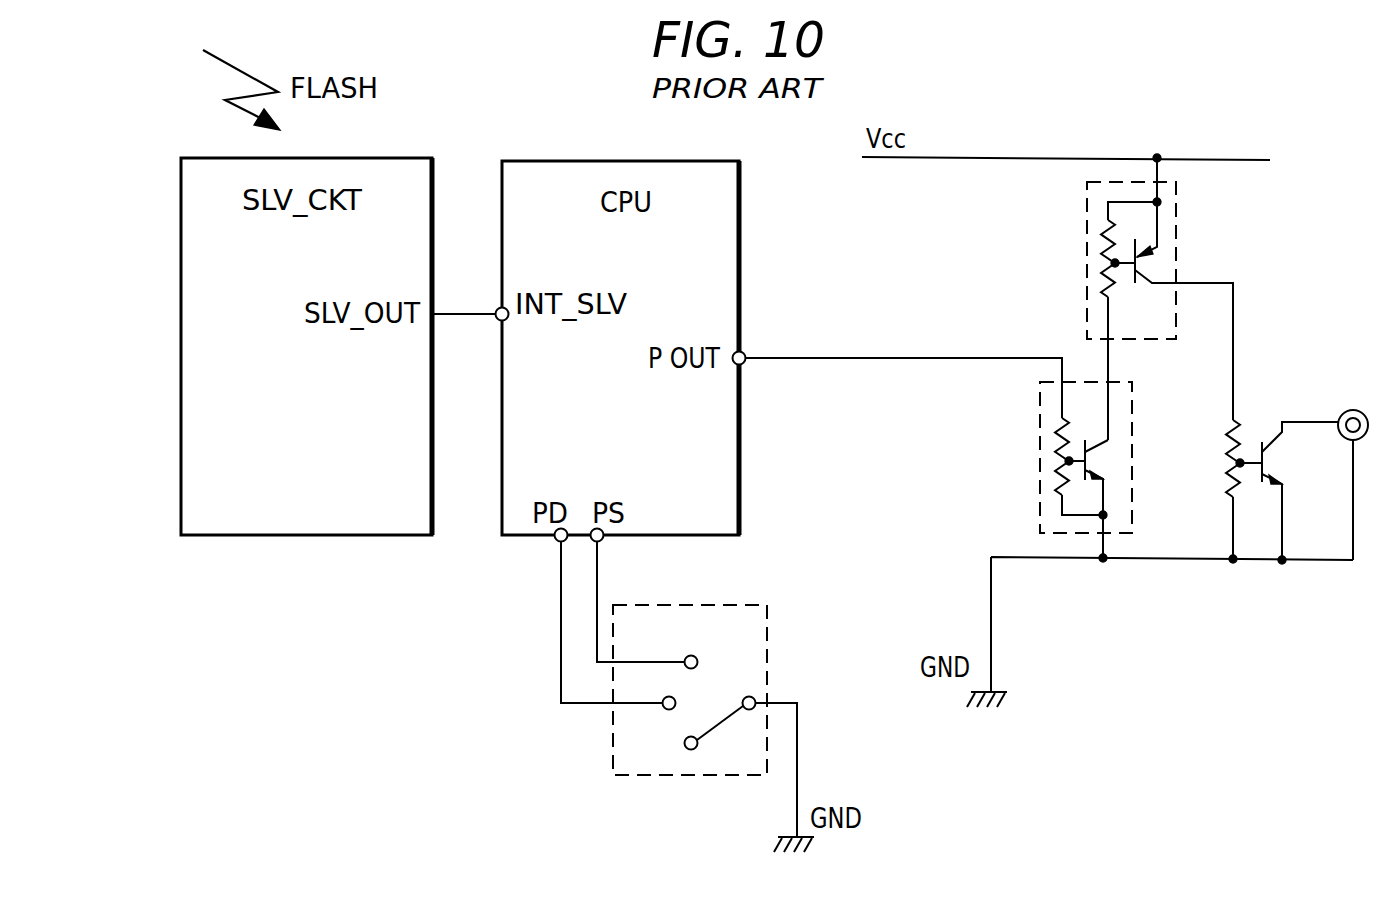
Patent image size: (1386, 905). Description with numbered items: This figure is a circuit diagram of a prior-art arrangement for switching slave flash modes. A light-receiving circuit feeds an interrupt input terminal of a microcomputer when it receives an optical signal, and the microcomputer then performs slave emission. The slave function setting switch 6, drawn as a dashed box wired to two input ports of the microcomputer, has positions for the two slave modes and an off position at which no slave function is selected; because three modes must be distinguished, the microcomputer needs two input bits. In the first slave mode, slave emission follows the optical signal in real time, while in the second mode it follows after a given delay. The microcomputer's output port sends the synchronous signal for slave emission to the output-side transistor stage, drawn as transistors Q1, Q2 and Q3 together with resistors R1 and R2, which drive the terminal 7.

The slave function setting switch 6 is at (715, 605).
The output terminal 7 is at (1355, 410).
The transistor Q1 is at (1105, 472).
The transistor Q2 is at (1160, 297).
The transistor Q3 is at (1289, 493).
The resistor R1 is at (1214, 441).
The resistor R2 is at (1214, 513).